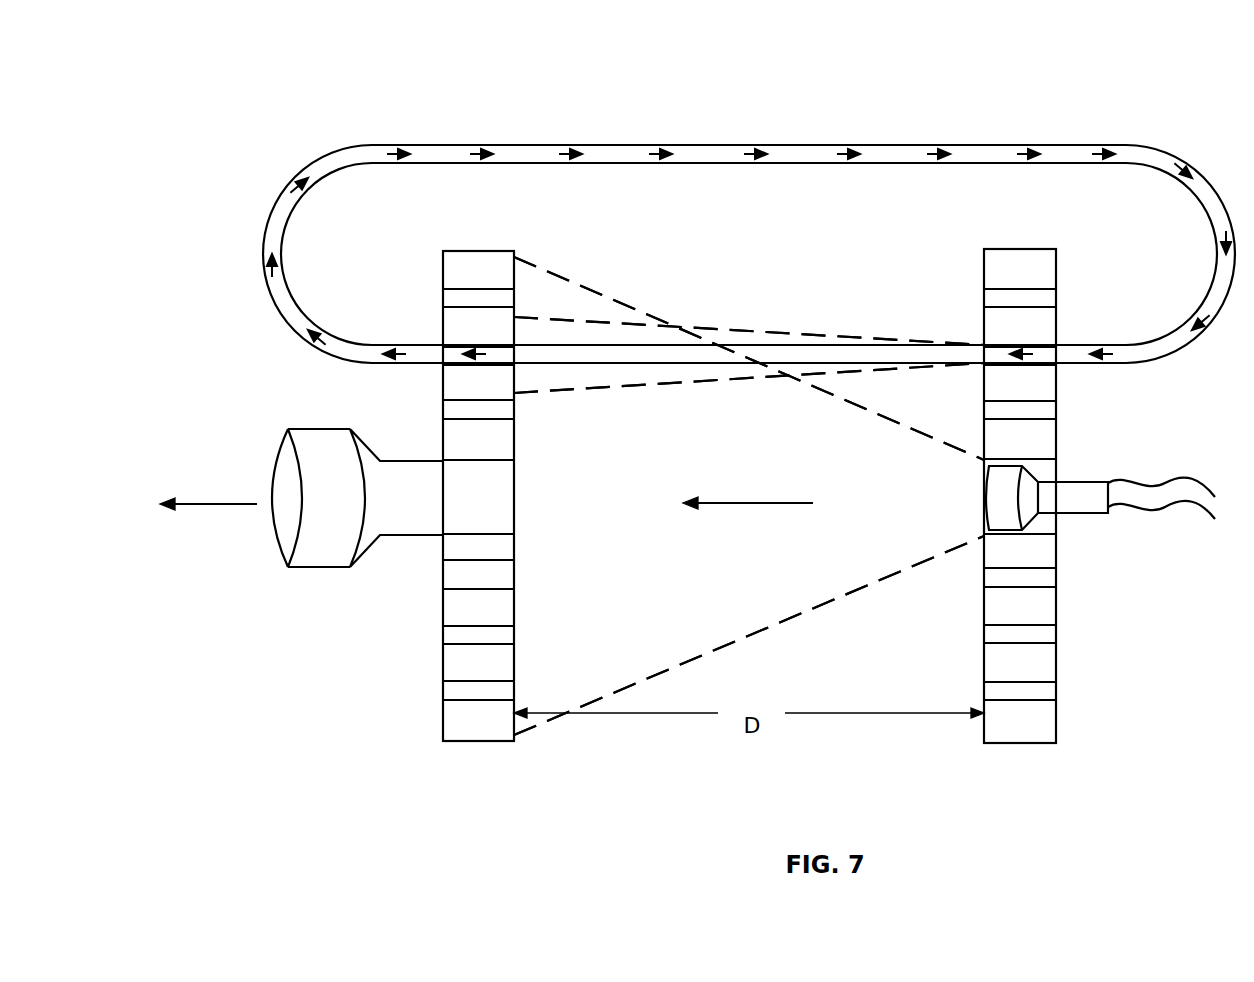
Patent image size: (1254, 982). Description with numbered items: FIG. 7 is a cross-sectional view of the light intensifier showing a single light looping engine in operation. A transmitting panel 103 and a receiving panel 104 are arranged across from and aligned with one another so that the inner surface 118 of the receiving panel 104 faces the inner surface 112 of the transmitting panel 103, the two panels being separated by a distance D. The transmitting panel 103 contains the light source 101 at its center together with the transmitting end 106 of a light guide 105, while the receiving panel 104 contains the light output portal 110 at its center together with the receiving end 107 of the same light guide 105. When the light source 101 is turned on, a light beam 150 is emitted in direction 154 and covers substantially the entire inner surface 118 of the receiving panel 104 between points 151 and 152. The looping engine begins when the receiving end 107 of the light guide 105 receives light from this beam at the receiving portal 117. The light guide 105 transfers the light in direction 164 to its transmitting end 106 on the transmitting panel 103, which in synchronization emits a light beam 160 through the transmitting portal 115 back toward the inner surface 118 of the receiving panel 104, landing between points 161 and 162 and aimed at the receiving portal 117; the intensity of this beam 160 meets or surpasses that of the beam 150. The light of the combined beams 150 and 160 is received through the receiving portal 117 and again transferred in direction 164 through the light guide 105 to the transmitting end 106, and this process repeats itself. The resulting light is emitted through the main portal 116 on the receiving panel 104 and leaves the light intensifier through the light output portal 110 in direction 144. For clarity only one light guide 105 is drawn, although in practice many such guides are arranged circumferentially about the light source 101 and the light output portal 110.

The light source 101 is at (1080, 515).
The transmitting panel 103 is at (1018, 249).
The receiving panel 104 is at (472, 251).
The light guide 105 is at (818, 146).
The transmitting end 106 is at (1095, 368).
The receiving end 107 is at (405, 368).
The light output portal 110 is at (367, 550).
The inner surface of transmitting panel 112 is at (984, 605).
The transmitting portal 115 is at (984, 350).
The main portal 116 is at (514, 508).
The receiving portal 117 is at (455, 345).
The inner surface of receiving panel 118 is at (514, 608).
The output direction 144 is at (201, 506).
The light beam 150 is at (845, 502).
The first point 151 is at (514, 258).
The second point 152 is at (514, 733).
The emission direction 154 is at (755, 503).
The light beam 160 is at (587, 367).
The first point 161 is at (514, 317).
The second point 162 is at (514, 393).
The transfer direction 164 is at (477, 150).